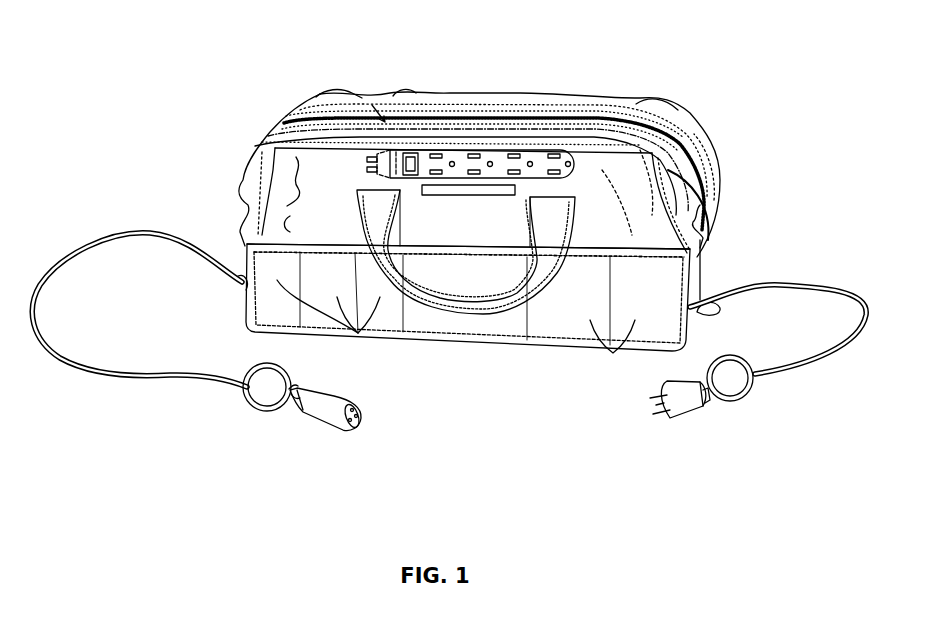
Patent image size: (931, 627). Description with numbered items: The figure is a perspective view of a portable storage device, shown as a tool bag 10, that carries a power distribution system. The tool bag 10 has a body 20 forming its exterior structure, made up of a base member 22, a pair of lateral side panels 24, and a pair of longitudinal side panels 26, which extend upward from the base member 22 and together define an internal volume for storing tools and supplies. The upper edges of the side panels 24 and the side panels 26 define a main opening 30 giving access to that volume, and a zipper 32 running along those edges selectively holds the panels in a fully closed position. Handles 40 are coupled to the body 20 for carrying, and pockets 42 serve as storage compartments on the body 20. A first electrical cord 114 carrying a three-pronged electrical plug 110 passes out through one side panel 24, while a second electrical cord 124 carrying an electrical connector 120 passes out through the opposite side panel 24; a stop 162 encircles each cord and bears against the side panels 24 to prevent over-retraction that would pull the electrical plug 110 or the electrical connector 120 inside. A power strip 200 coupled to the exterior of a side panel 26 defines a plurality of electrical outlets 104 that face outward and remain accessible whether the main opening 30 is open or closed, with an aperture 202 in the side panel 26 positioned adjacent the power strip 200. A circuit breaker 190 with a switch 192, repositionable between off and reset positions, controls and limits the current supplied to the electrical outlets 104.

The tool bag 10 is at (733, 21).
The body 20 is at (248, 102).
The base member 22 is at (545, 347).
The side panels 24 is at (245, 226).
The side panels 26 is at (692, 259).
The main opening 30 is at (488, 90).
The zipper 32 is at (585, 120).
The handles 40 is at (475, 316).
The pockets 42 is at (358, 333).
The electrical outlets 104 is at (475, 154).
The electrical plug 110 is at (689, 412).
The electrical cord 114 is at (850, 316).
The electrical connector 120 is at (326, 425).
The electrical cord 124 is at (156, 380).
The stops 162 is at (262, 410).
The circuit breaker 190 is at (366, 92).
The switch 192 is at (411, 152).
The power strip 200 is at (577, 163).
The aperture 202 is at (483, 198).